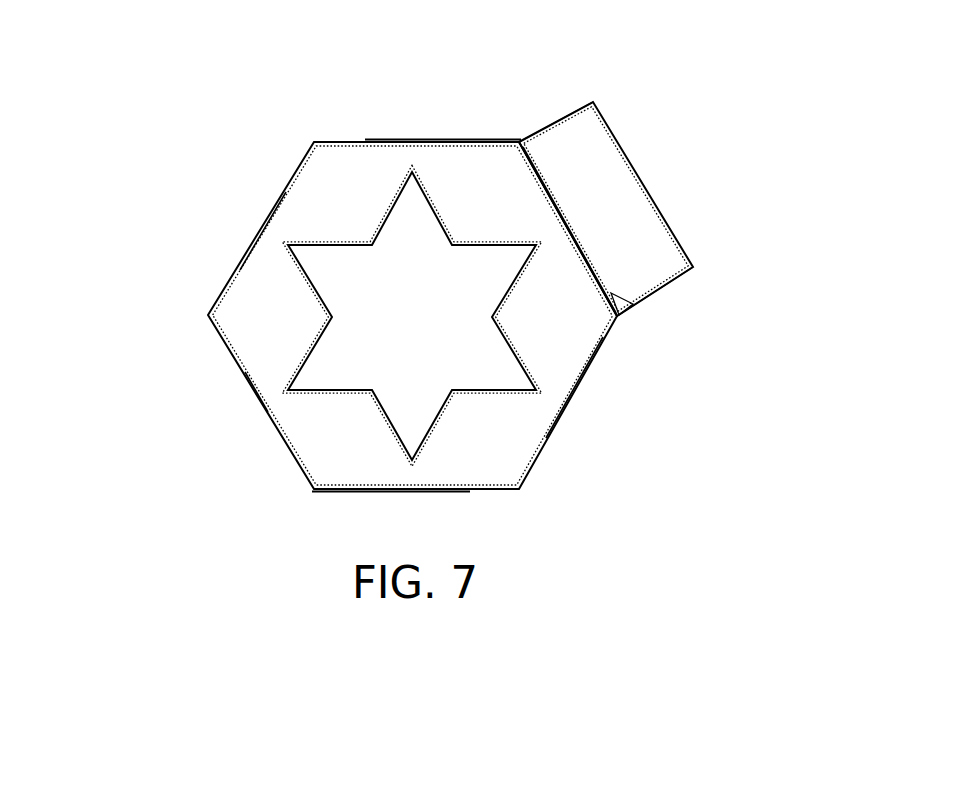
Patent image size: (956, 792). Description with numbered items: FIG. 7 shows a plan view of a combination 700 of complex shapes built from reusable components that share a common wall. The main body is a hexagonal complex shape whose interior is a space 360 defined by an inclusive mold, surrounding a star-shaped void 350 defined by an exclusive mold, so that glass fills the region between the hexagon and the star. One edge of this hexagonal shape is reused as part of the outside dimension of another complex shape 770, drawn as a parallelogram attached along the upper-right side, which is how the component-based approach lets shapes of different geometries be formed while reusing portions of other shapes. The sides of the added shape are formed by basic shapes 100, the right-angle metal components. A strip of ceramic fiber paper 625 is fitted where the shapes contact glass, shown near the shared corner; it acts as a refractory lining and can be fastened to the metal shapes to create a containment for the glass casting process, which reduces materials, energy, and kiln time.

The hexagonal panel assembly 700 is at (224, 128).
The void 350 is at (411, 315).
The space 360 is at (568, 229).
The complex shape 770 is at (606, 209).
The basic shape 100 is at (593, 102).
The ceramic fiber paper 625 is at (622, 298).